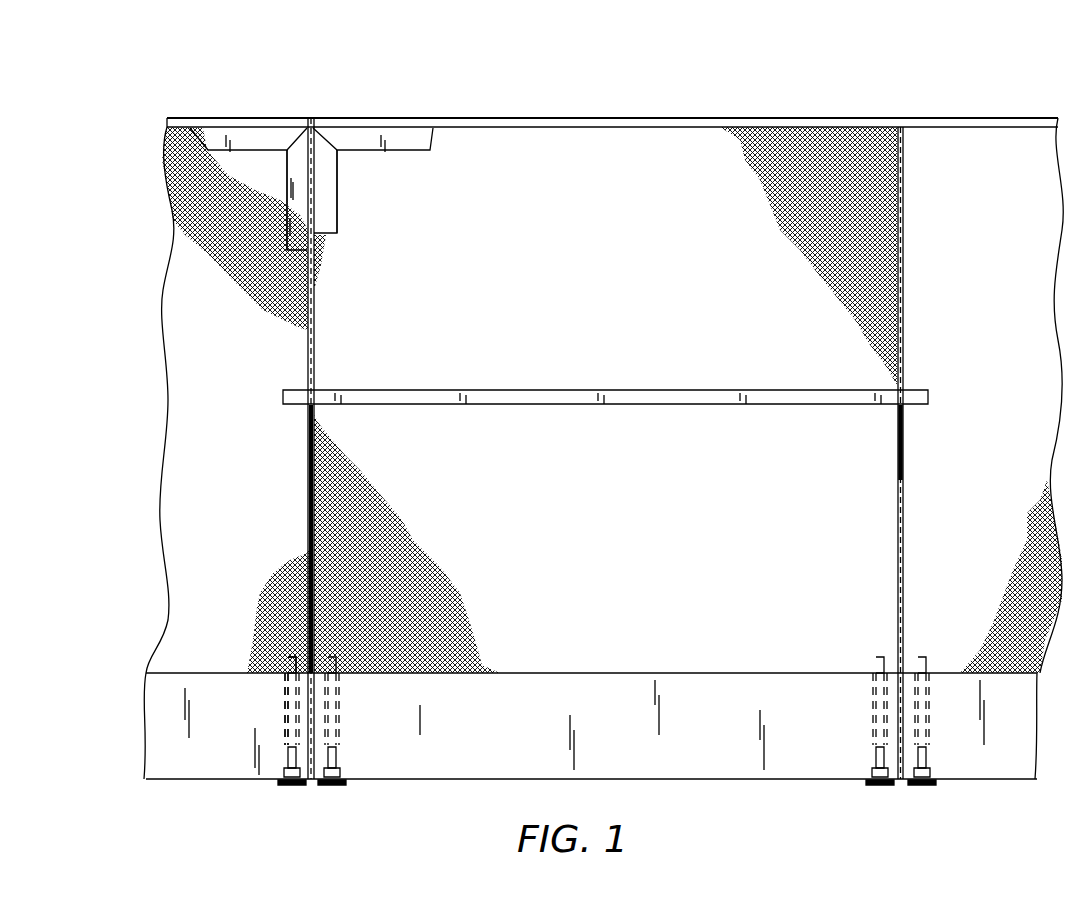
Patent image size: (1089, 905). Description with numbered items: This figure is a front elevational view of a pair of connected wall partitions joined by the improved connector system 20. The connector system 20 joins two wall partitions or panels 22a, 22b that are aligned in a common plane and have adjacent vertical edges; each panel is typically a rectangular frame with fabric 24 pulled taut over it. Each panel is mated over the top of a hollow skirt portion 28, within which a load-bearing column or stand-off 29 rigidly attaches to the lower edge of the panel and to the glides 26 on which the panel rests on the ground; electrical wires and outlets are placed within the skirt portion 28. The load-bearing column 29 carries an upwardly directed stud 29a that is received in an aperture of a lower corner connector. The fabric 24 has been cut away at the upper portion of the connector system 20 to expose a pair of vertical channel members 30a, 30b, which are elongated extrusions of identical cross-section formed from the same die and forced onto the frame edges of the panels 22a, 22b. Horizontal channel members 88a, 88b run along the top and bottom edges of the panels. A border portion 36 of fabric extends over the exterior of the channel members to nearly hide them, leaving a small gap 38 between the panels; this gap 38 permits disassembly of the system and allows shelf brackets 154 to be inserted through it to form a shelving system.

The connector system 20 is at (312, 98).
The wall partition 22a is at (220, 120).
The wall partition 22b is at (661, 110).
The fabric 24 is at (590, 339).
The glides 26 is at (328, 786).
The skirt portion 28 is at (157, 718).
The load-bearing column 29 is at (280, 727).
The stud 29a is at (247, 642).
The vertical channel member 30a is at (297, 179).
The vertical channel member 30b is at (327, 207).
The border portion 36 is at (293, 357).
The gap 38 is at (307, 530).
The horizontal channel member 88a is at (281, 137).
The horizontal channel member 88b is at (363, 137).
The shelf brackets 154 is at (308, 437).